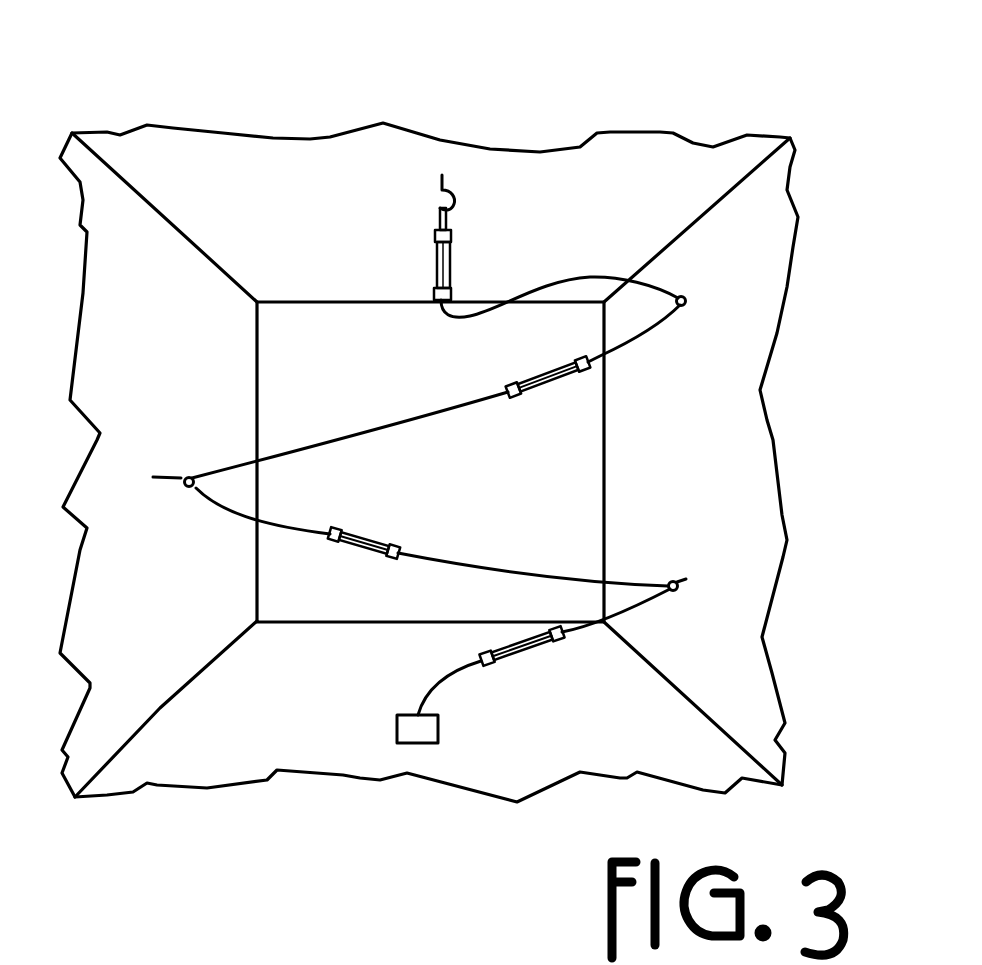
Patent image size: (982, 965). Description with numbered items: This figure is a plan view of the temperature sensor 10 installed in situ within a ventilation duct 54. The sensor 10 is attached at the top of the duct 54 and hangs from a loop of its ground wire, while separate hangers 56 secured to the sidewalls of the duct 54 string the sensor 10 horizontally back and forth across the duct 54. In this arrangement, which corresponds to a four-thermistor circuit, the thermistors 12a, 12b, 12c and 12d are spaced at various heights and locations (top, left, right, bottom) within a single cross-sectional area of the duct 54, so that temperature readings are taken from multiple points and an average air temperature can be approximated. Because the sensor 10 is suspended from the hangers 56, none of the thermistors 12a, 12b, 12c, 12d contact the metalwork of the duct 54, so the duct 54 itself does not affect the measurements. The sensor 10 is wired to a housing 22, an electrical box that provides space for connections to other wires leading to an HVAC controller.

The temperature sensor 10 is at (808, 79).
The first thermistor 12a is at (501, 661).
The second thermistor 12b is at (358, 530).
The third thermistor 12c is at (550, 392).
The fourth thermistor 12d is at (448, 243).
The housing 22 is at (406, 733).
The duct 54 is at (790, 473).
The hangers 56 is at (690, 295).